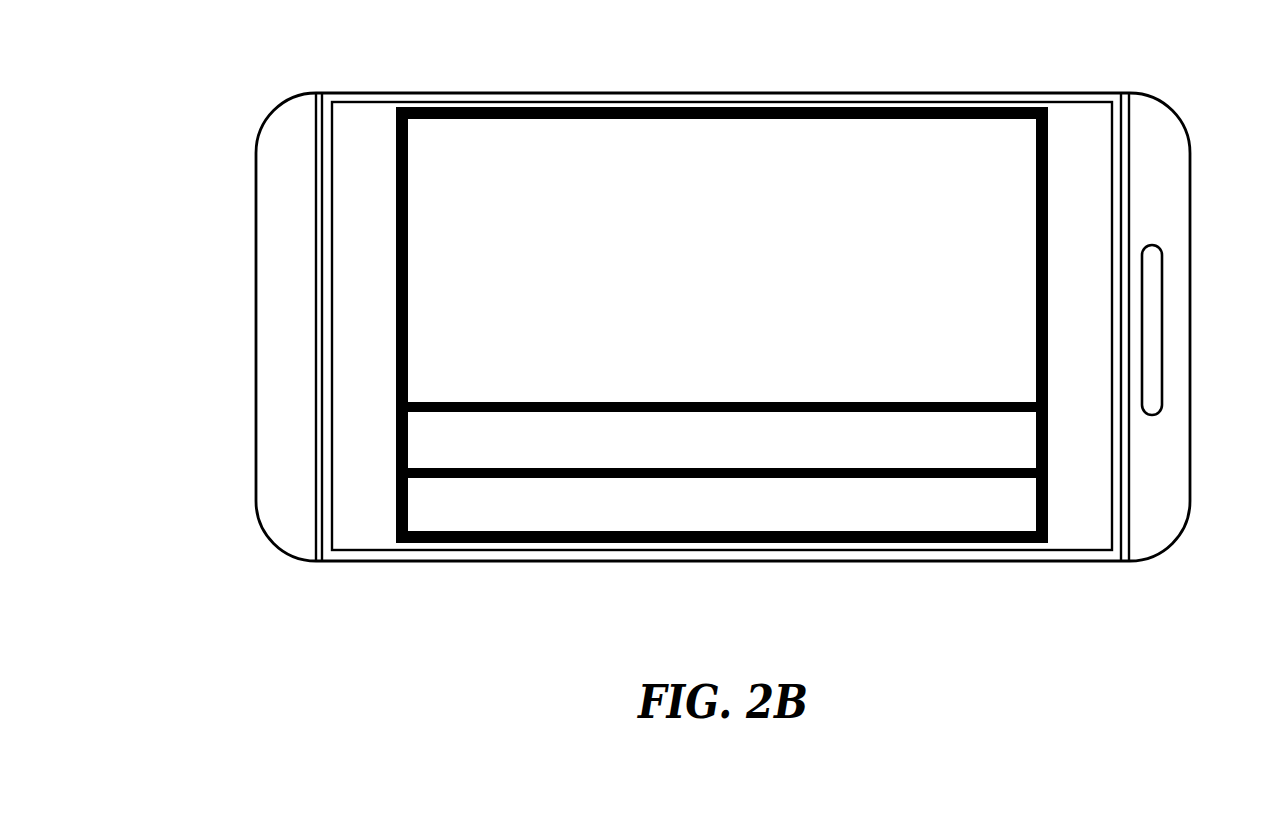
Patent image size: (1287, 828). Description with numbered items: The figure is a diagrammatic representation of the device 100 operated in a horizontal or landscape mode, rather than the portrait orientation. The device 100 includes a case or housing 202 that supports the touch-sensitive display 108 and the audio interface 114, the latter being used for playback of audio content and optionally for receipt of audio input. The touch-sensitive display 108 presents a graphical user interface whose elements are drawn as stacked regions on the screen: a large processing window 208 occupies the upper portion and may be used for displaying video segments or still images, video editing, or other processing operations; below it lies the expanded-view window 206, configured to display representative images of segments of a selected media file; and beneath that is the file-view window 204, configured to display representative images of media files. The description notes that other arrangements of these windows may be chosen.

The device 100 is at (408, 652).
The housing 202 is at (256, 251).
The audio interface 114 is at (1155, 311).
The display 108 is at (478, 108).
The processing window 208 is at (875, 158).
The expanded-view window 206 is at (497, 440).
The file-view window 204 is at (950, 515).